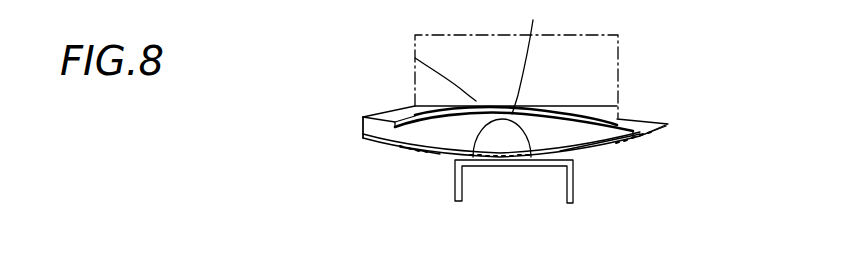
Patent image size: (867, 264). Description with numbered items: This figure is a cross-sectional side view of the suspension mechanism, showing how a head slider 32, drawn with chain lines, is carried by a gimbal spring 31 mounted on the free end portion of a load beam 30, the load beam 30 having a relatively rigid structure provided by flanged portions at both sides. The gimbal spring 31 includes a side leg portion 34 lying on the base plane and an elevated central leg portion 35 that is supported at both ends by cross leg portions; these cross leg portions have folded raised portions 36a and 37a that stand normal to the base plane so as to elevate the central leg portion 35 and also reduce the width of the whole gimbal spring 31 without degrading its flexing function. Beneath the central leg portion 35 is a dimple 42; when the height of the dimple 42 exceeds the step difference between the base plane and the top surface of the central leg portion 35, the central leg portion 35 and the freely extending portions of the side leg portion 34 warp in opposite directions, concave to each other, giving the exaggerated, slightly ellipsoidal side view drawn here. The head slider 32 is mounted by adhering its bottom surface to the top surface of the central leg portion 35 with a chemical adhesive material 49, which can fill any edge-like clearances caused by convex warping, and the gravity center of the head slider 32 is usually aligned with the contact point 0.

The contact point 0 is at (522, 57).
The load beam 30 is at (578, 184).
The gimbal spring 31 is at (380, 145).
The head slider 32 is at (622, 34).
The side leg portion 34 is at (443, 156).
The central leg portion 35 is at (415, 58).
The folded raised portion 36a is at (371, 128).
The folded raised portion 37a is at (669, 125).
The dimple 42 is at (520, 142).
The chemical adhesive material 49 is at (617, 113).